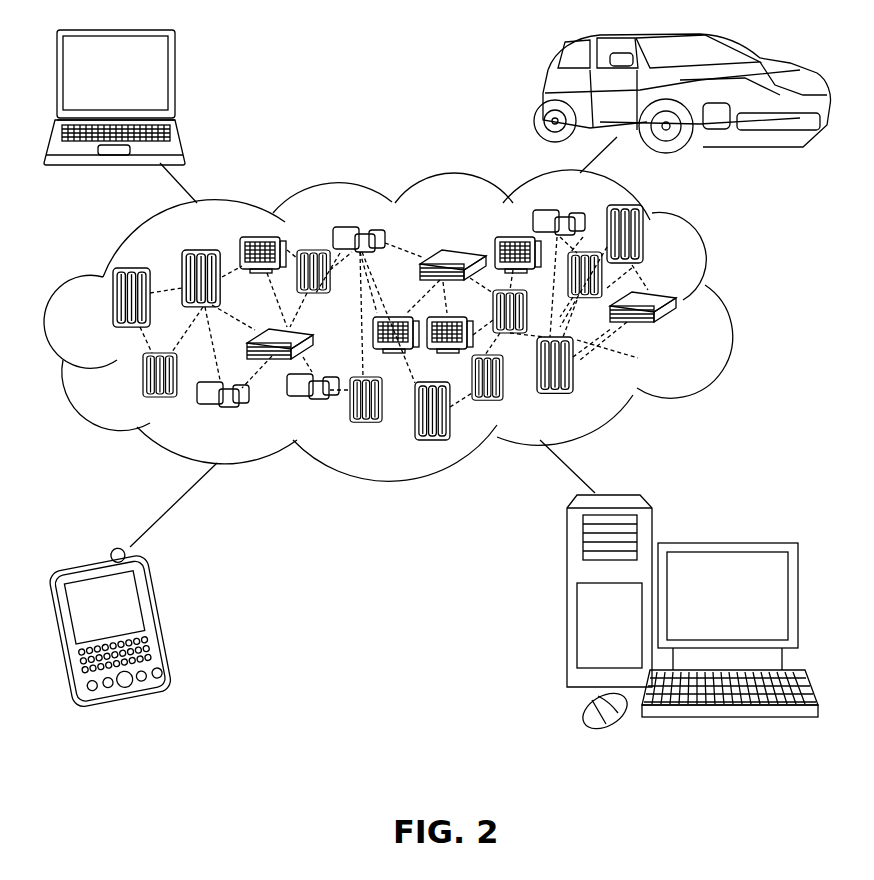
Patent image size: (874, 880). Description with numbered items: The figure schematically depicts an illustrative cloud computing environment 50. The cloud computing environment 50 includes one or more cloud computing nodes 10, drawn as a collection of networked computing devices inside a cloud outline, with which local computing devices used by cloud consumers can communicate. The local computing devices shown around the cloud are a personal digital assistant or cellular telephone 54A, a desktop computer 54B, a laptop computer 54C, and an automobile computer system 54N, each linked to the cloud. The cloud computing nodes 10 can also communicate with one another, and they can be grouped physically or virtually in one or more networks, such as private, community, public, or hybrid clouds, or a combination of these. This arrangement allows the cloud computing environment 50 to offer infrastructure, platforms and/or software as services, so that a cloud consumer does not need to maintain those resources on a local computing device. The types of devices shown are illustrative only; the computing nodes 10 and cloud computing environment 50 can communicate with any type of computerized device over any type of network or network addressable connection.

The cloud computing node 10 is at (688, 335).
The cloud computing environment 50 is at (723, 307).
The personal digital assistant or cellular telephone 54A is at (163, 621).
The desktop computer 54B is at (724, 543).
The laptop computer 54C is at (174, 82).
The automobile computer system 54N is at (542, 95).